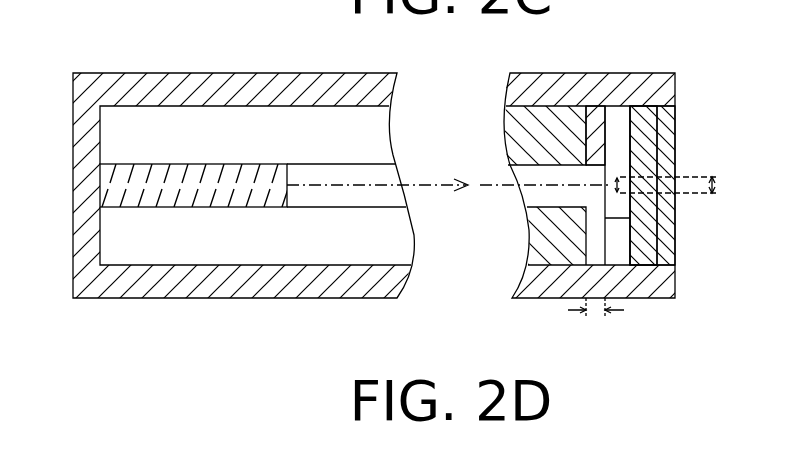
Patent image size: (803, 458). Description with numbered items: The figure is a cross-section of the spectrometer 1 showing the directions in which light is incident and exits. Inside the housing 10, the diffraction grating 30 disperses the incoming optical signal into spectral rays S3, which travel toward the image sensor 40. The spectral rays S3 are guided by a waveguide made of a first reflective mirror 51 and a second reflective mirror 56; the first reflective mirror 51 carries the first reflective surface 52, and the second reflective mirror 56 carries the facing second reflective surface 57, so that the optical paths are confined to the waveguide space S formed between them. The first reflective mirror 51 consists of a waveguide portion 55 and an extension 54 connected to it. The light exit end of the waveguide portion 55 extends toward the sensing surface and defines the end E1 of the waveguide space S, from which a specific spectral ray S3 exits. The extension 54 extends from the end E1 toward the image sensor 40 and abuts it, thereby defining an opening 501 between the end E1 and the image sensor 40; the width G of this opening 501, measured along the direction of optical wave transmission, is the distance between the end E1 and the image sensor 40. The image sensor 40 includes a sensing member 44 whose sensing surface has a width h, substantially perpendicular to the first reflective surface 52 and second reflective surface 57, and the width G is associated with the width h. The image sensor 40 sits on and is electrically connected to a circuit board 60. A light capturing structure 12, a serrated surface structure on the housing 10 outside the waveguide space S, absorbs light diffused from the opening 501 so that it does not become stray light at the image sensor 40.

The spectrometer 1 is at (713, 65).
The housing 10 is at (143, 92).
The light capturing structure 12 is at (638, 120).
The diffraction grating 30 is at (100, 185).
The image sensor 40 is at (588, 218).
The sensing member 44 is at (590, 171).
The first reflective mirror 51 is at (258, 128).
The first reflective surface 52 is at (367, 163).
The extension 54 is at (593, 123).
The waveguide portion 55 is at (559, 95).
The second reflective mirror 56 is at (258, 250).
The second reflective surface 57 is at (332, 207).
The circuit board 60 is at (662, 262).
The opening 501 is at (597, 145).
The end of the waveguide space E1 is at (633, 162).
The waveguide space S is at (576, 197).
The spectral rays S3 is at (465, 198).
The width of the opening G is at (596, 323).
The width of the sensing surface h is at (676, 185).